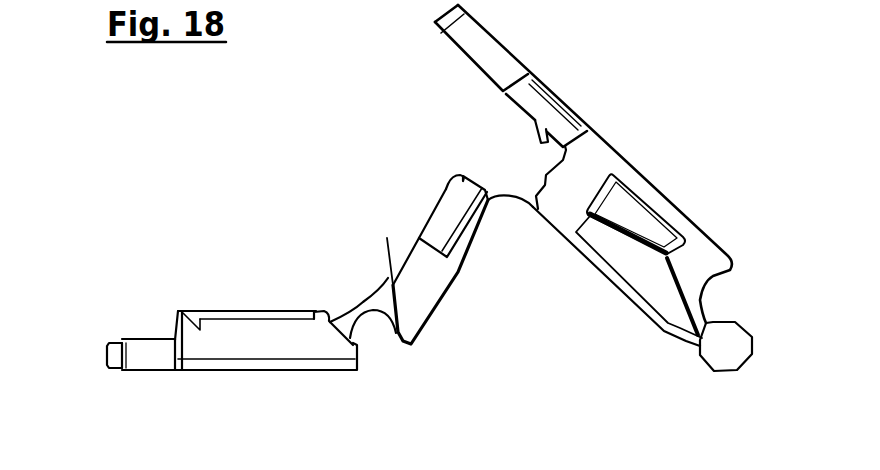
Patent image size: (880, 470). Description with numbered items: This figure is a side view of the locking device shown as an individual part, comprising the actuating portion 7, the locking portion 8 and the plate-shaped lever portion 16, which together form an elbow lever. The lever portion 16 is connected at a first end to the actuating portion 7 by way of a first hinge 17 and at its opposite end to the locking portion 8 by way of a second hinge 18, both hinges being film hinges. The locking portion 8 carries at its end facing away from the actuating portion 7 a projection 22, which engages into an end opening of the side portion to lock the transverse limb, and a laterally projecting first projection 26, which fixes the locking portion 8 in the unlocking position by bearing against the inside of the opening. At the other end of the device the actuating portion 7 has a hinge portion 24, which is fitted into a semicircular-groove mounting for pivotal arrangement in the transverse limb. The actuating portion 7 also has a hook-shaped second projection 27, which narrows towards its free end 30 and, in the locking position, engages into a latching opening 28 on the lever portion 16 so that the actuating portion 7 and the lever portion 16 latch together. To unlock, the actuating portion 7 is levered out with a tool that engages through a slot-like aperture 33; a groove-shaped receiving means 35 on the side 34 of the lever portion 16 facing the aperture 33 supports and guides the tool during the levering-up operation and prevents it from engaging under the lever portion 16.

The actuating portion 7 is at (639, 164).
The locking portion 8 is at (177, 308).
The lever portion 16 is at (440, 303).
The first hinge 17 is at (518, 201).
The second hinge 18 is at (342, 315).
The projection 22 is at (132, 353).
The hinge portion 24 is at (717, 355).
The first projection 26 is at (257, 311).
The second projection 27 is at (535, 132).
The latching opening 28 is at (446, 188).
The free end 30 is at (538, 136).
The aperture 33 is at (563, 118).
The side 34 is at (393, 265).
The receiving means 35 is at (442, 220).